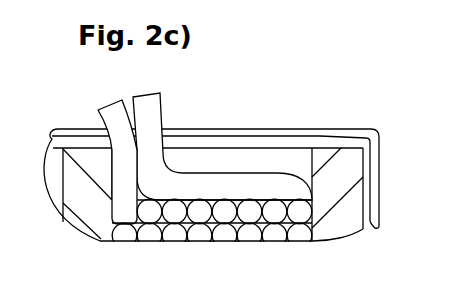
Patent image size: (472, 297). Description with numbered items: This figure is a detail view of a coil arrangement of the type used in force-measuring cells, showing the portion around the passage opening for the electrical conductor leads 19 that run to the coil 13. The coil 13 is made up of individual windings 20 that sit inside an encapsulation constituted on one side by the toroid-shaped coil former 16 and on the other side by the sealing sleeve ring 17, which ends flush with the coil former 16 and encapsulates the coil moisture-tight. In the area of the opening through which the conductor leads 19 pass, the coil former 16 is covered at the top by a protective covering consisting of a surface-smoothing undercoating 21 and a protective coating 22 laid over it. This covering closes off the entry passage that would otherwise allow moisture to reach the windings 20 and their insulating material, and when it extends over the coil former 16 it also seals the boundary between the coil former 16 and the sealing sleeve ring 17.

The coil 13 is at (272, 242).
The coil former 16 is at (83, 199).
The sealing sleeve ring 17 is at (338, 178).
The electrical conductor leads 19 is at (148, 117).
The windings 20 is at (204, 237).
The surface-smoothing undercoating 21 is at (227, 141).
The protective coating 22 is at (285, 134).